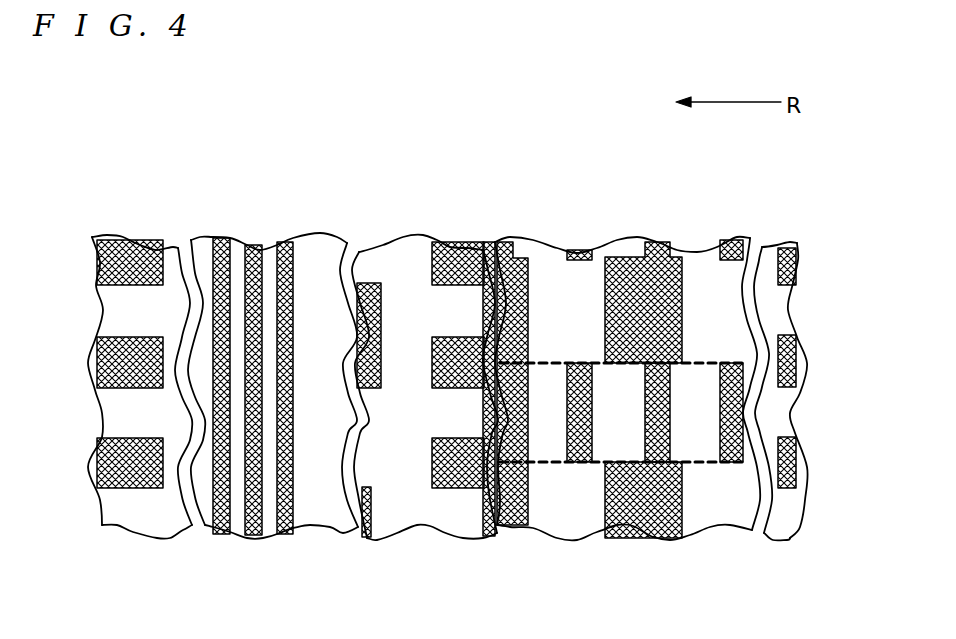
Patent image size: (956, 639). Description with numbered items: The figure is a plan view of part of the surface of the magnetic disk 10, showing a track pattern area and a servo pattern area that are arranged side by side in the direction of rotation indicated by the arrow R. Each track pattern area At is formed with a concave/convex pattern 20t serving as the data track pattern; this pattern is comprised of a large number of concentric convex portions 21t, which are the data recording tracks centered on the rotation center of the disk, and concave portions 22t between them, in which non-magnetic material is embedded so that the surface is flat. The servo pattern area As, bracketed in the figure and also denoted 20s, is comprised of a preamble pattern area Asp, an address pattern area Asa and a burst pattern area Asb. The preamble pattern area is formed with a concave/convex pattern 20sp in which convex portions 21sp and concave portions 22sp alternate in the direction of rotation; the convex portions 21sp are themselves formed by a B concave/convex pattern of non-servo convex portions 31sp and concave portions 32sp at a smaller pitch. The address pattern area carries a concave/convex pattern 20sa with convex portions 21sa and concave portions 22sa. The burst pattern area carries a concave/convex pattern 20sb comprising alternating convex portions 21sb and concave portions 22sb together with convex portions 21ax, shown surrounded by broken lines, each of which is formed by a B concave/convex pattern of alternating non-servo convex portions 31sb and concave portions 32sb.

The magnetic disk 10 is at (368, 101).
The concave/convex pattern 20t is at (187, 195).
The servo region As 20s is at (700, 147).
The concave/convex pattern 20sp is at (350, 195).
The concave/convex pattern 20sa is at (493, 195).
The concave/convex pattern 20sb is at (752, 195).
The convex portions 21t is at (90, 255).
The concave portions 22t is at (118, 314).
The convex portions 21sp is at (293, 538).
The concave portions 22sp is at (207, 469).
The convex portions 31sp is at (252, 251).
The concave portions 32sp is at (254, 251).
The convex portions 21sa is at (387, 360).
The concave portions 22sa is at (407, 509).
The convex portions 21sb is at (532, 500).
The concave portions 22sb is at (581, 507).
The convex portions 21ax is at (607, 429).
The convex portions 31sb is at (624, 398).
The concave portions 32sb is at (607, 343).